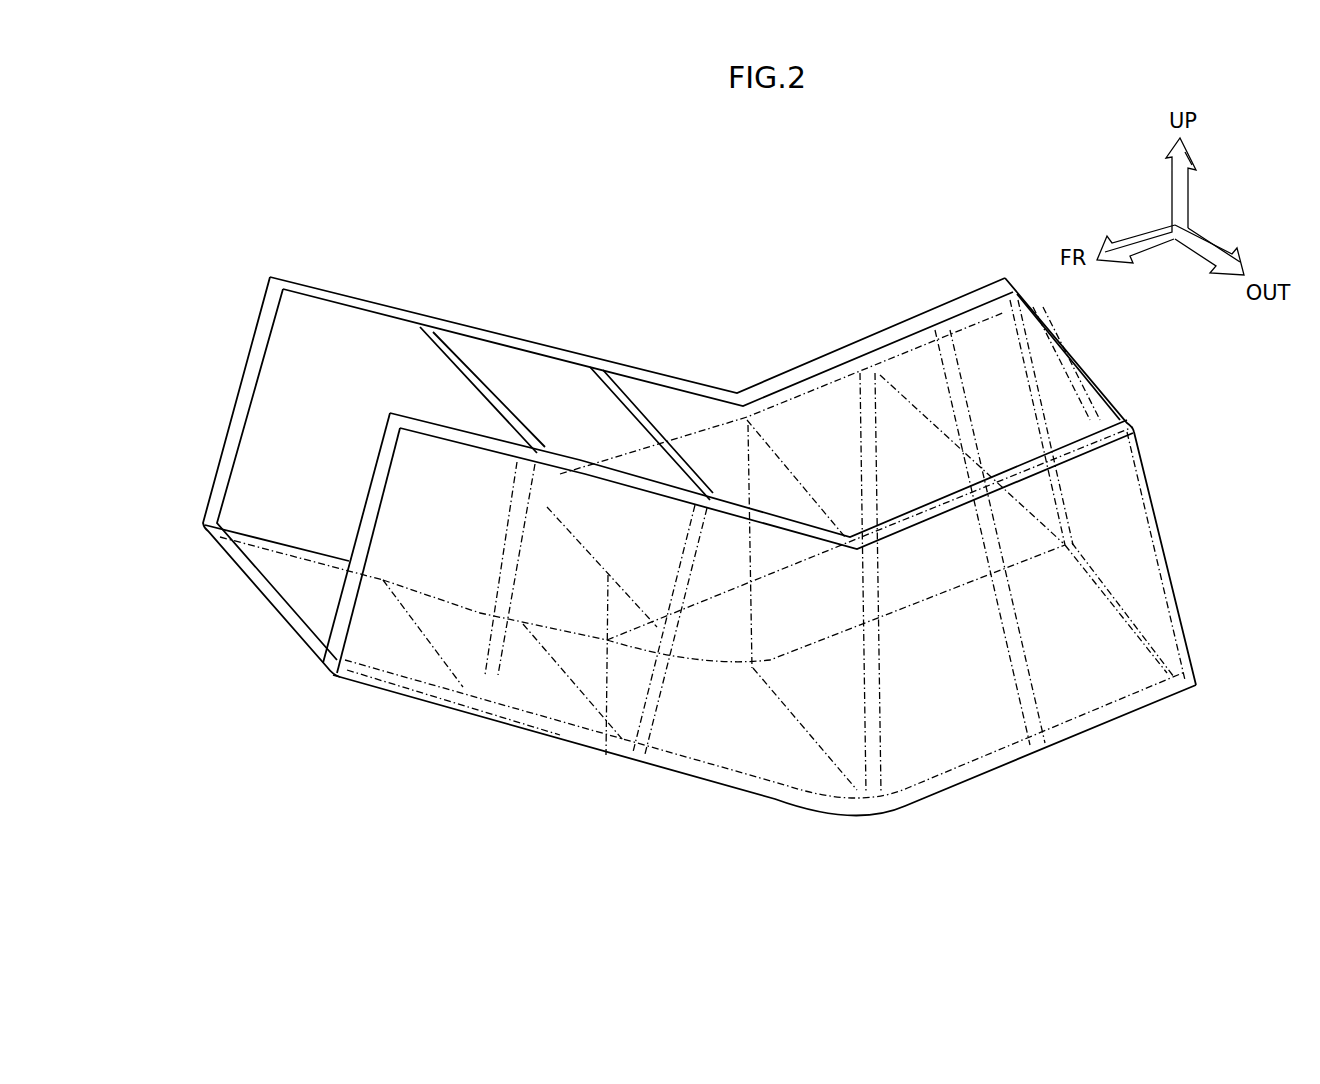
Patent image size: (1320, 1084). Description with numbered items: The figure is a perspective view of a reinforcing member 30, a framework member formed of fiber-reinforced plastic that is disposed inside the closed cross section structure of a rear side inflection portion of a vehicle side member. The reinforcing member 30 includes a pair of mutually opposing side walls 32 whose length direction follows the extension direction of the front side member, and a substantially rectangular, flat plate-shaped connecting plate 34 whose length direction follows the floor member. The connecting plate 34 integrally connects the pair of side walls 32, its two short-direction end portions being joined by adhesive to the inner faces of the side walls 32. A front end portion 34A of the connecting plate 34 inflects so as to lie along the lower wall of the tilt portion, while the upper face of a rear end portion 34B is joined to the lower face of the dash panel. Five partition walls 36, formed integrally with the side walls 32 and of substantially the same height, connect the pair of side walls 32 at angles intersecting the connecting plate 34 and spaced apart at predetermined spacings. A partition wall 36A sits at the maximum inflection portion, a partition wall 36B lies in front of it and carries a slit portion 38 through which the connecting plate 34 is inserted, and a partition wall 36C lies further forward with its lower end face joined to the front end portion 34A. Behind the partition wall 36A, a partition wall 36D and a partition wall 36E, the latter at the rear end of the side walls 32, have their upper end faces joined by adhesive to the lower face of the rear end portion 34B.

The reinforcing member 30 is at (857, 278).
The side wall 32 is at (330, 348).
The connecting plate 34 is at (838, 434).
The front end portion 34A is at (303, 590).
The rear end portion 34B is at (1066, 413).
The partition wall 36 is at (802, 545).
The partition wall 36A is at (827, 683).
The partition wall 36B is at (596, 420).
The partition wall 36C is at (443, 393).
The partition wall 36D is at (974, 625).
The partition wall 36E is at (1118, 528).
The slit portion 38 is at (580, 750).